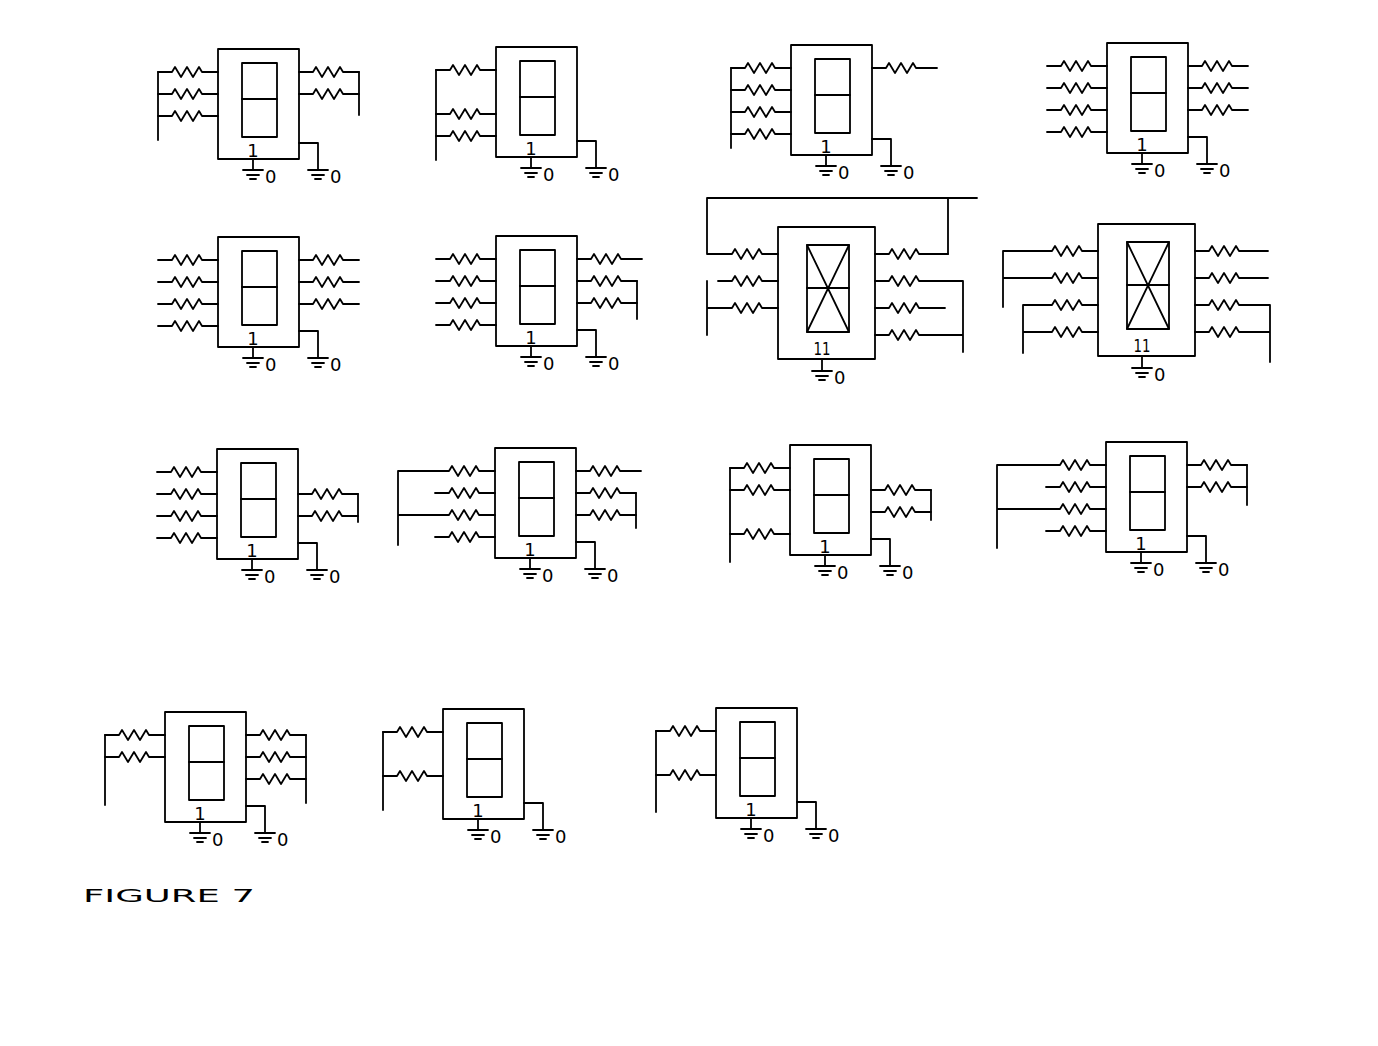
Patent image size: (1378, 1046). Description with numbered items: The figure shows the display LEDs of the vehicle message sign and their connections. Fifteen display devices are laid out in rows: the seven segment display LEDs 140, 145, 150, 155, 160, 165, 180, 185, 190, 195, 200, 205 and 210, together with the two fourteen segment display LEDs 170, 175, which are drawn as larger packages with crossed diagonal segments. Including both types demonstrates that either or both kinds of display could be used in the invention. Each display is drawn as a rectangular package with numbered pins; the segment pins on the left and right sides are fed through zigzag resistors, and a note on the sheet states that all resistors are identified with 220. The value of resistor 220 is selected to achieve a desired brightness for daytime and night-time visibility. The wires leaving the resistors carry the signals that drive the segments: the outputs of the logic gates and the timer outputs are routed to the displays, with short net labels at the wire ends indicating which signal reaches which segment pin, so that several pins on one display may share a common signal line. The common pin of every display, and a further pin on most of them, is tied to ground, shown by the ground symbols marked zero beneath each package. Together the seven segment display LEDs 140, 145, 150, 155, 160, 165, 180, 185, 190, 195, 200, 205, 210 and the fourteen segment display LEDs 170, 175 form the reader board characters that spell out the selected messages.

The seven segment display LED 140 is at (259, 118).
The seven segment display LED 145 is at (522, 116).
The seven segment display LED 150 is at (839, 114).
The seven segment display LED 155 is at (1148, 112).
The seven segment display LED 160 is at (259, 306).
The seven segment display LED 165 is at (536, 305).
The fourteen segment display LED 170 is at (847, 287).
The fourteen segment display LED 175 is at (1141, 304).
The seven segment display LED 180 is at (251, 518).
The seven segment display LED 185 is at (526, 517).
The seven segment display LED 190 is at (833, 514).
The seven segment display LED 195 is at (1123, 511).
The seven segment display LED 200 is at (205, 781).
The seven segment display LED 205 is at (472, 778).
The seven segment display LED 210 is at (745, 777).
The resistor 220 is at (1088, 655).